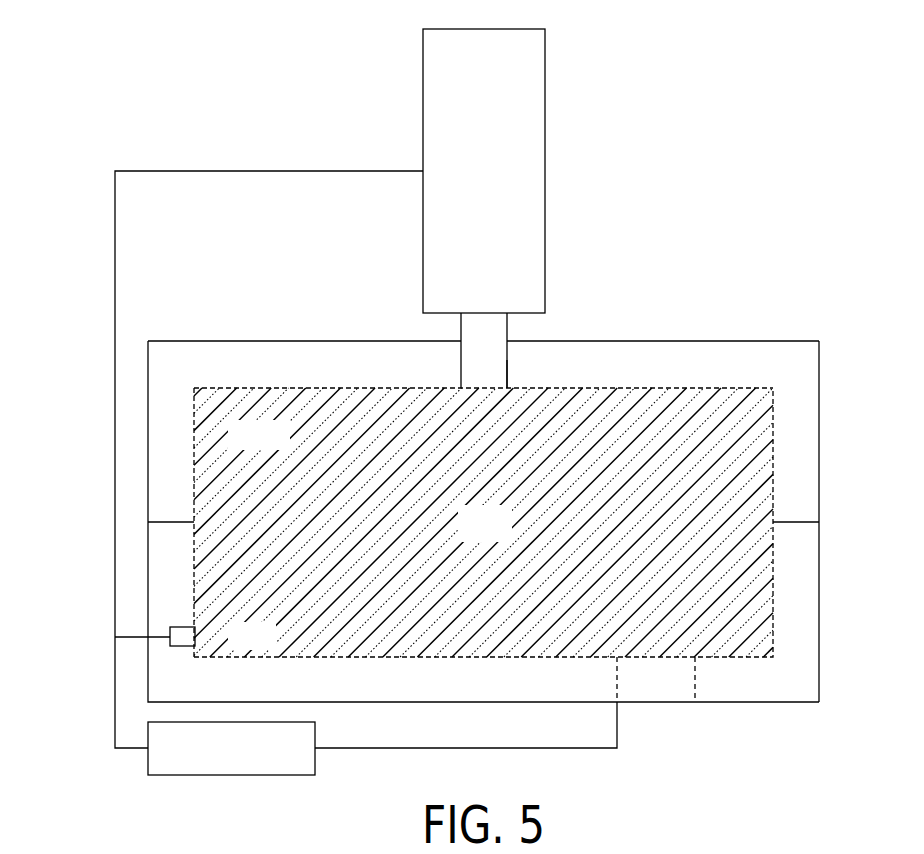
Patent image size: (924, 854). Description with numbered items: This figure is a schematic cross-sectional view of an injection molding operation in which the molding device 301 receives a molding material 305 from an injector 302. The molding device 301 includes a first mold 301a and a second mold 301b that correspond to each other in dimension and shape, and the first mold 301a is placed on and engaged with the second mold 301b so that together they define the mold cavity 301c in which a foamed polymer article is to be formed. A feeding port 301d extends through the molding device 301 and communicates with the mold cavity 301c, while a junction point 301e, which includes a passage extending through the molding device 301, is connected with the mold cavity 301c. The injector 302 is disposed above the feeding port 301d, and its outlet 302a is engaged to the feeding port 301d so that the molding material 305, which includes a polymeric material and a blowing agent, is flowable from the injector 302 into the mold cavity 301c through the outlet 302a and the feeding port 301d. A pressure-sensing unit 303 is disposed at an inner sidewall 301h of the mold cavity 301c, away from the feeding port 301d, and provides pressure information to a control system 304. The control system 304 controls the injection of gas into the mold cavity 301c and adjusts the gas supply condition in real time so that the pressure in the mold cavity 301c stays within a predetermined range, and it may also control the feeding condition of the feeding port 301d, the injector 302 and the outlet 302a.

The molding device 301 is at (96, 342).
The first mold 301a is at (808, 447).
The second mold 301b is at (808, 597).
The mold cavity 301c is at (684, 382).
The feeding port 301d is at (514, 367).
The junction point 301e is at (656, 690).
The inner sidewall 301h is at (196, 430).
The injector 302 is at (503, 187).
The outlet 302a is at (473, 328).
The pressure-sensing unit 303 is at (186, 637).
The control system 304 is at (250, 765).
The molding material 305 is at (503, 538).